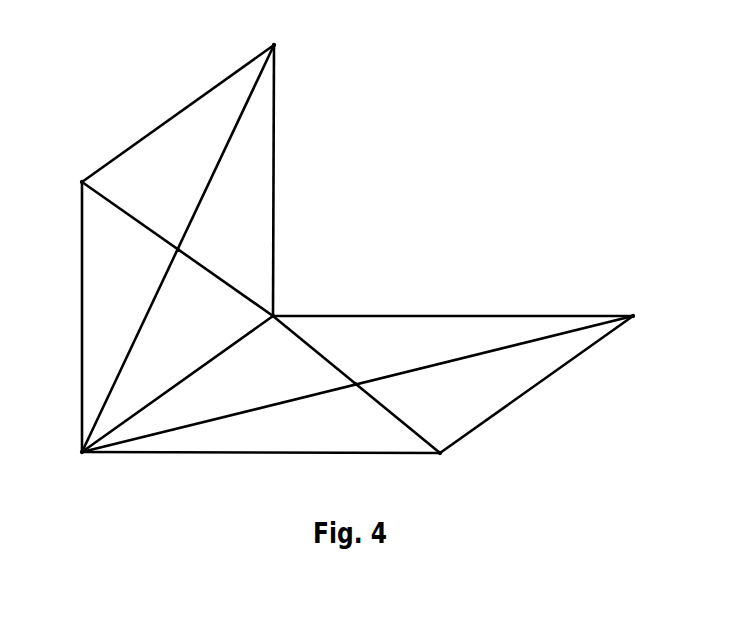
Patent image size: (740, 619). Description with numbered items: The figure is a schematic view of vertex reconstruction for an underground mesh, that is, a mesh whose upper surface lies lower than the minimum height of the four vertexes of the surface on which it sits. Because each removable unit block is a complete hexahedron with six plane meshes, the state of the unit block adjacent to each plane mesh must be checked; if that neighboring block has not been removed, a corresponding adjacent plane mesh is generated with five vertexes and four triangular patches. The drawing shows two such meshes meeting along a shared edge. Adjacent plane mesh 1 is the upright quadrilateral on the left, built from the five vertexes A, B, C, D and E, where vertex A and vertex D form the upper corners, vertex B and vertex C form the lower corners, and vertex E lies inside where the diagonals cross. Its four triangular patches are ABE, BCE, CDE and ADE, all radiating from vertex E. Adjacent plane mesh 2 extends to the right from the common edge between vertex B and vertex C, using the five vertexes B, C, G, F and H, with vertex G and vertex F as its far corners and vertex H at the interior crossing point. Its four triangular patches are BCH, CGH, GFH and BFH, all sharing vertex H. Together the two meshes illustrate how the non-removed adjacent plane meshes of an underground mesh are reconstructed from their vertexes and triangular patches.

The adjacent plane mesh 1 is at (258, 193).
The adjacent plane mesh 2 is at (497, 290).
The vertex A is at (62, 180).
The vertex B is at (60, 466).
The vertex C is at (291, 293).
The vertex D is at (296, 50).
The vertex E is at (200, 245).
The vertex F is at (447, 477).
The vertex G is at (648, 318).
The vertex H is at (348, 409).